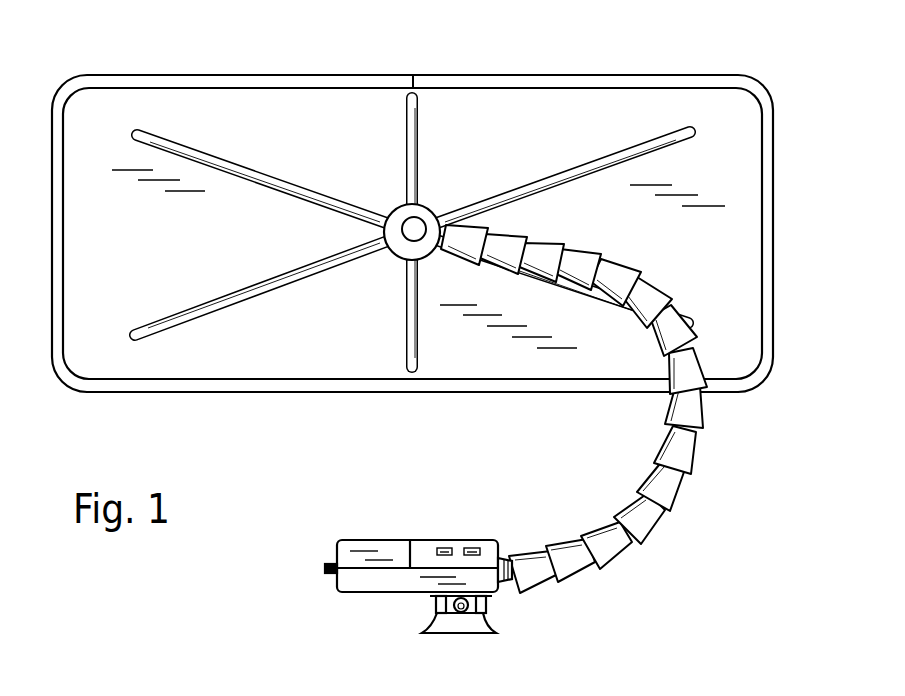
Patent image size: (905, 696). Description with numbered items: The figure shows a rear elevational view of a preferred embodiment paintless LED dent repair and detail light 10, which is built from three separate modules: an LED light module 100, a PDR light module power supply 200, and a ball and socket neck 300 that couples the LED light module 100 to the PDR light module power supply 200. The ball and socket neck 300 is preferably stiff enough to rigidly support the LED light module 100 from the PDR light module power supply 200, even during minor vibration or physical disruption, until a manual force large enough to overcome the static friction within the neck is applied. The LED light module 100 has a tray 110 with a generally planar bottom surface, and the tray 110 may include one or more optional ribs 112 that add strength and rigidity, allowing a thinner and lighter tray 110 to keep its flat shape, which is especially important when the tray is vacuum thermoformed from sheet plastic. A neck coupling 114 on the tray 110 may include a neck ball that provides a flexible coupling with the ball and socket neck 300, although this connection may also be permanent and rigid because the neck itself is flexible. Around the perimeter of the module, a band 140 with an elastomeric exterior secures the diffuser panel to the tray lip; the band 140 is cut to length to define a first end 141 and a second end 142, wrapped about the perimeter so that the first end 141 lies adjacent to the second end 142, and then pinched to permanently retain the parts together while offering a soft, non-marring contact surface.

The paintless LED dent repair and detail light 10 is at (152, 48).
The LED light module 100 is at (569, 70).
The tray 110 is at (247, 106).
The ribs 112 is at (408, 150).
The neck coupling 114 is at (421, 212).
The band 140 is at (318, 386).
The first end 141 is at (438, 82).
The second end 142 is at (382, 82).
The PDR light module power supply 200 is at (370, 600).
The ball and socket neck 300 is at (684, 500).